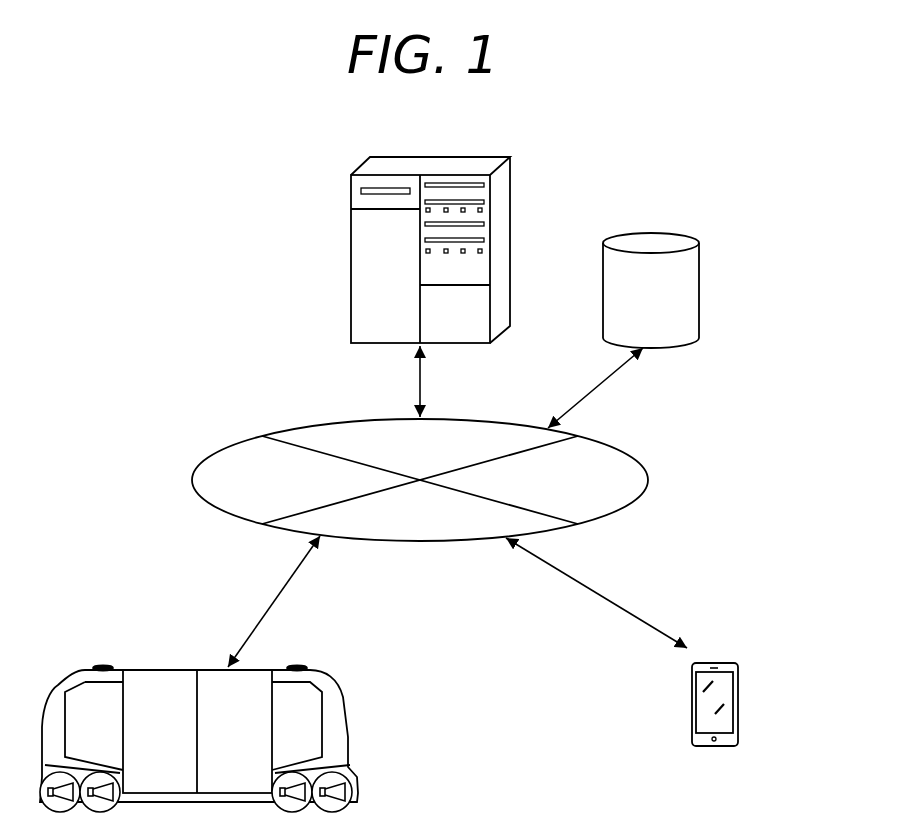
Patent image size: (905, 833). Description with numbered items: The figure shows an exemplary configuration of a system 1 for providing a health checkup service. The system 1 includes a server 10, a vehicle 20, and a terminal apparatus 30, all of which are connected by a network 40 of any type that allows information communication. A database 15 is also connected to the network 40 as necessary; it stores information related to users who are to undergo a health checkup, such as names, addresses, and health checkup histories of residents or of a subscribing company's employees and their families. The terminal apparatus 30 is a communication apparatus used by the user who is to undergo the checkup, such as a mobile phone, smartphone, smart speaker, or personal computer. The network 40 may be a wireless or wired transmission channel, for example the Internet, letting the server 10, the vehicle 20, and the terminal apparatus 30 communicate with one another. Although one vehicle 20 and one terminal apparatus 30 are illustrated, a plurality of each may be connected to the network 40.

The system 1 is at (185, 344).
The server 10 is at (351, 252).
The database 15 is at (700, 293).
The vehicle 20 is at (175, 670).
The terminal apparatus 30 is at (738, 700).
The network 40 is at (650, 478).